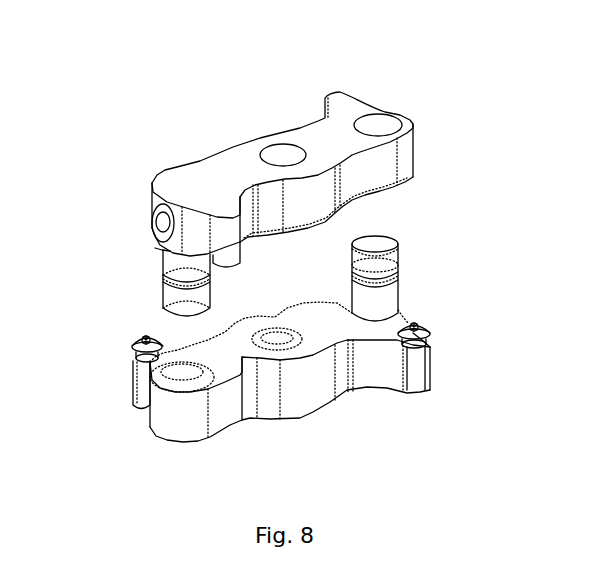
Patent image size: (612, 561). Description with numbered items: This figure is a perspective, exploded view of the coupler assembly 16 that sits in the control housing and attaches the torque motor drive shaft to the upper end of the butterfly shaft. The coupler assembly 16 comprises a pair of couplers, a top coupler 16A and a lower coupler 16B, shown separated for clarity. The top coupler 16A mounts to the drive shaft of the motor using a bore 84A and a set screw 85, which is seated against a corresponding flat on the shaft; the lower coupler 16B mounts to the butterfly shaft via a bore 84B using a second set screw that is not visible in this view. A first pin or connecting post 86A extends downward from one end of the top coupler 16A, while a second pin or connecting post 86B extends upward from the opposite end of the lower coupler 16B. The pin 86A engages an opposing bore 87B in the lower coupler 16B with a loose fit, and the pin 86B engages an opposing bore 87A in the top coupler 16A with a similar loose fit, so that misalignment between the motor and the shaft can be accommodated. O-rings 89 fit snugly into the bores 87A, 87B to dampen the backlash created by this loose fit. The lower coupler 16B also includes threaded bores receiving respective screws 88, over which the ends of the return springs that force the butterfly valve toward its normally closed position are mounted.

The coupler assembly 16 is at (196, 66).
The top coupler 16A is at (200, 181).
The lower coupler 16B is at (232, 412).
The bore 84A is at (285, 155).
The bore 84B is at (283, 342).
The set screw 85 is at (160, 220).
The first pin or connecting post 86A is at (175, 268).
The second pin or connecting post 86B is at (390, 300).
The bore 87A is at (378, 125).
The bore 87B is at (183, 372).
The screw 88 is at (425, 328).
The O-ring 89 is at (172, 287).